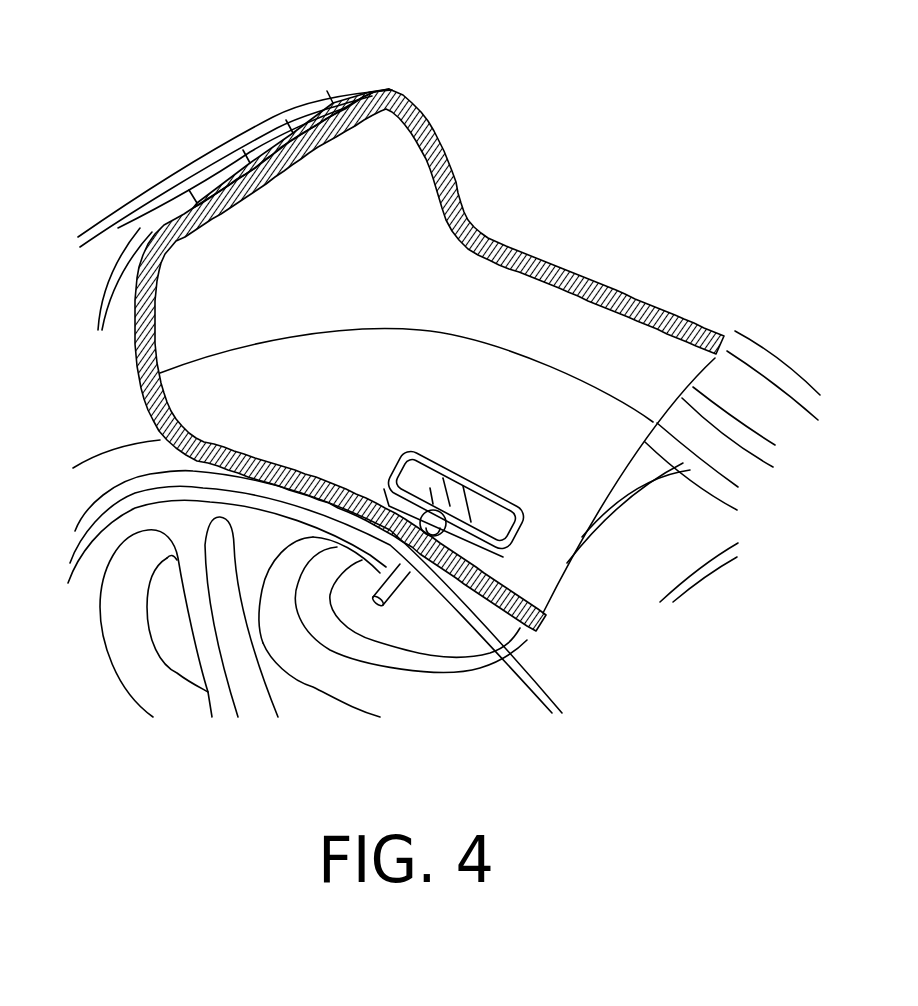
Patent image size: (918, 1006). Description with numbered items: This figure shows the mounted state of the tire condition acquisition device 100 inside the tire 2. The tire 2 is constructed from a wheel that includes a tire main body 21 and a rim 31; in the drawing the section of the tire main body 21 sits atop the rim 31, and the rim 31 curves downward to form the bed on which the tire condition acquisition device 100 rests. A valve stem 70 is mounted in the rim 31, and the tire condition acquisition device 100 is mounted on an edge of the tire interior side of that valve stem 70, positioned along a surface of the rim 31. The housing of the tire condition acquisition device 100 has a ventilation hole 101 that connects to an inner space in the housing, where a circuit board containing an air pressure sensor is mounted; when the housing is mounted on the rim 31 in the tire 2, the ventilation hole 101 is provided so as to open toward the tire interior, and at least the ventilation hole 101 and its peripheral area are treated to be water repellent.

The tire 2 is at (182, 92).
The tire main body 21 is at (160, 178).
The rim 31 is at (537, 437).
The tire condition acquisition device 100 is at (443, 457).
The ventilation hole 101 is at (427, 473).
The valve stem 70 is at (397, 600).